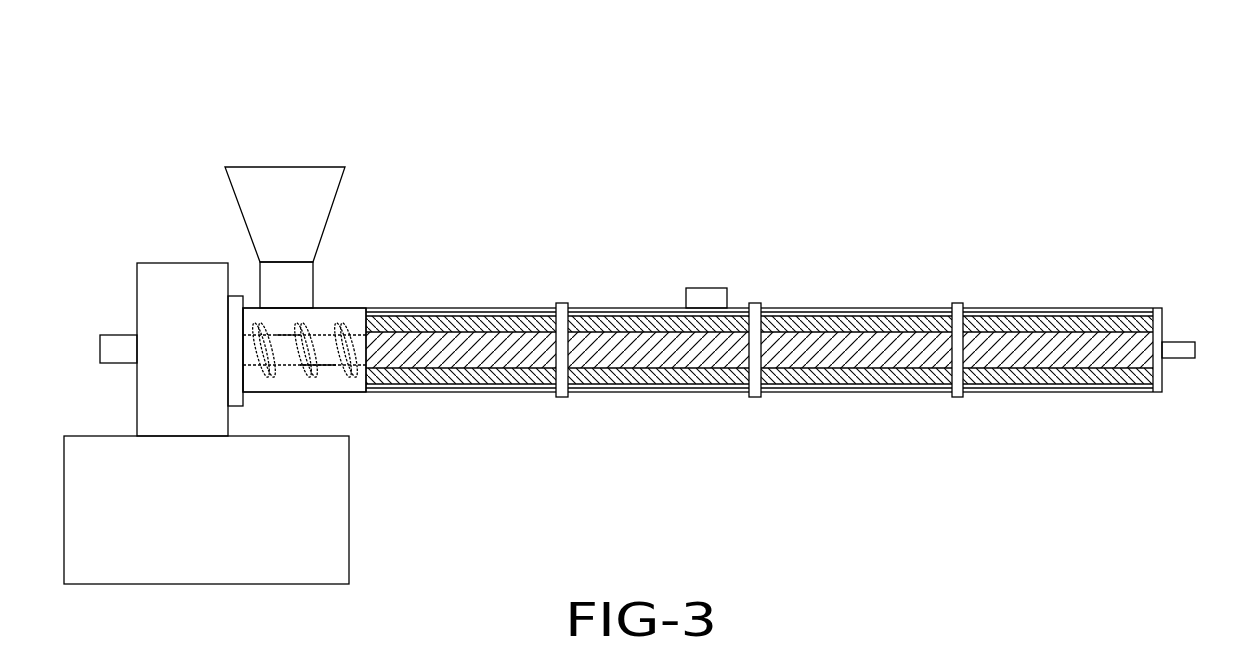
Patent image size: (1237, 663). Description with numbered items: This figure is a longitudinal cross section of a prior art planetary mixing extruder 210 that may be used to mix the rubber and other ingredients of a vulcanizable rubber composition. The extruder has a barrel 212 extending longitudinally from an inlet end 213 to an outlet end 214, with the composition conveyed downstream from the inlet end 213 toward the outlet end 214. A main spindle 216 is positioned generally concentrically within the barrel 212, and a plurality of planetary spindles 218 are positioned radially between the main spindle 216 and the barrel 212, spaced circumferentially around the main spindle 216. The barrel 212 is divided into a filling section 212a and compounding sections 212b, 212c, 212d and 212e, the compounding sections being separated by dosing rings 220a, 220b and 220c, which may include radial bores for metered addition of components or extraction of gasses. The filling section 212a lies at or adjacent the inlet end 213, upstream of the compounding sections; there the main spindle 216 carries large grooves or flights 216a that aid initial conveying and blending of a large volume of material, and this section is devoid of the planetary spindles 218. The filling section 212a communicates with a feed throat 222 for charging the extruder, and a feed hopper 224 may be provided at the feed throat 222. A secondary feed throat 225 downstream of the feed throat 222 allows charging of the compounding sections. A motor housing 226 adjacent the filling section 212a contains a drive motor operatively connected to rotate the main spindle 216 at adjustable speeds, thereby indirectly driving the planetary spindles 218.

The planetary mixing extruder 210 is at (747, 124).
The barrel 212 is at (460, 303).
The filling section 212a is at (343, 393).
The compounding section 212b is at (470, 393).
The compounding section 212c is at (617, 393).
The compounding section 212d is at (875, 393).
The compounding section 212e is at (1012, 393).
The inlet end 213 is at (258, 385).
The outlet end 214 is at (1152, 378).
The main spindle 216 is at (1090, 350).
The flights 216a is at (297, 375).
The planetary spindles 218 is at (878, 330).
The dosing ring 220a is at (565, 303).
The dosing ring 220b is at (761, 303).
The dosing ring 220c is at (959, 303).
The feed throat 222 is at (288, 296).
The feed hopper 224 is at (252, 198).
The secondary feed throat 225 is at (710, 288).
The motor housing 226 is at (172, 378).